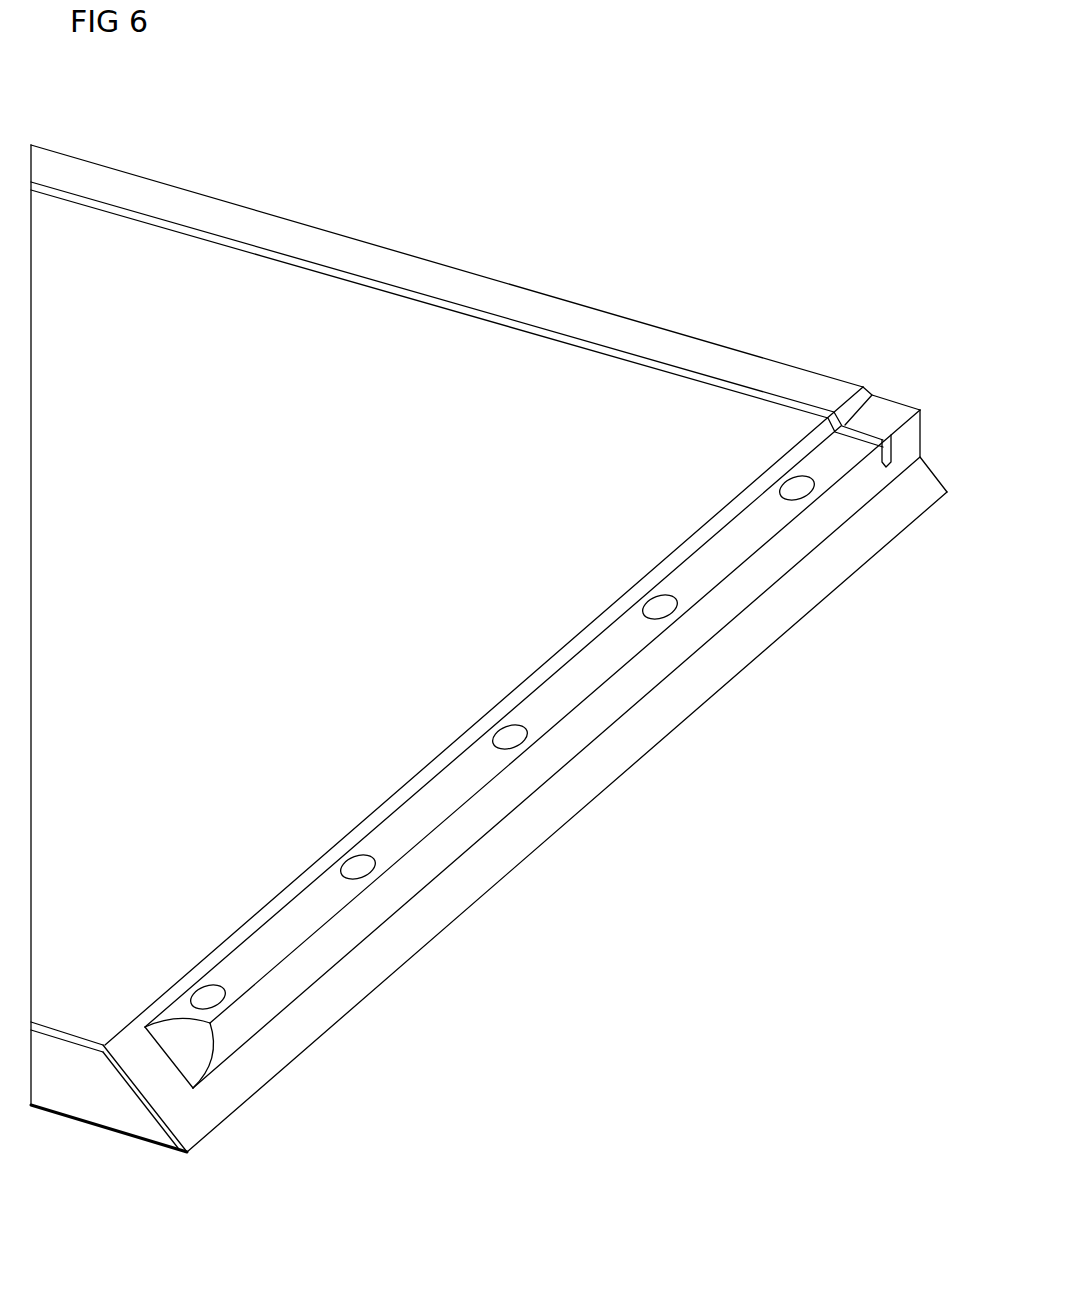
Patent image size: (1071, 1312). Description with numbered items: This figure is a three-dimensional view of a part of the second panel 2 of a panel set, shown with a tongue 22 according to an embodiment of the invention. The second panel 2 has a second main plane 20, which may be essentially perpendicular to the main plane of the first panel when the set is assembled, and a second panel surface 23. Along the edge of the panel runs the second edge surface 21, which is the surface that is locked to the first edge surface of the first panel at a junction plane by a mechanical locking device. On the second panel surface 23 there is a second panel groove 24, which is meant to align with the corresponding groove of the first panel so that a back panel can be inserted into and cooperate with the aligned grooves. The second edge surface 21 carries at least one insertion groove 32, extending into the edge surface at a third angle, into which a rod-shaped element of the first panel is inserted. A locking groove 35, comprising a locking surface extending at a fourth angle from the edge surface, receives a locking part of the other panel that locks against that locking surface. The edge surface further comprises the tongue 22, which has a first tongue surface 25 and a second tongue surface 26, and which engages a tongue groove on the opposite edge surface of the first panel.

The second panel 2 is at (553, 295).
The second main plane 20 is at (155, 263).
The second edge surface 21 is at (195, 1107).
The tongue 22 is at (855, 468).
The second panel surface 23 is at (662, 417).
The second panel groove 24 is at (418, 298).
The first tongue surface 25 is at (880, 415).
The second tongue surface 26 is at (918, 448).
The insertion groove 32 is at (508, 738).
The locking groove 35 is at (798, 490).